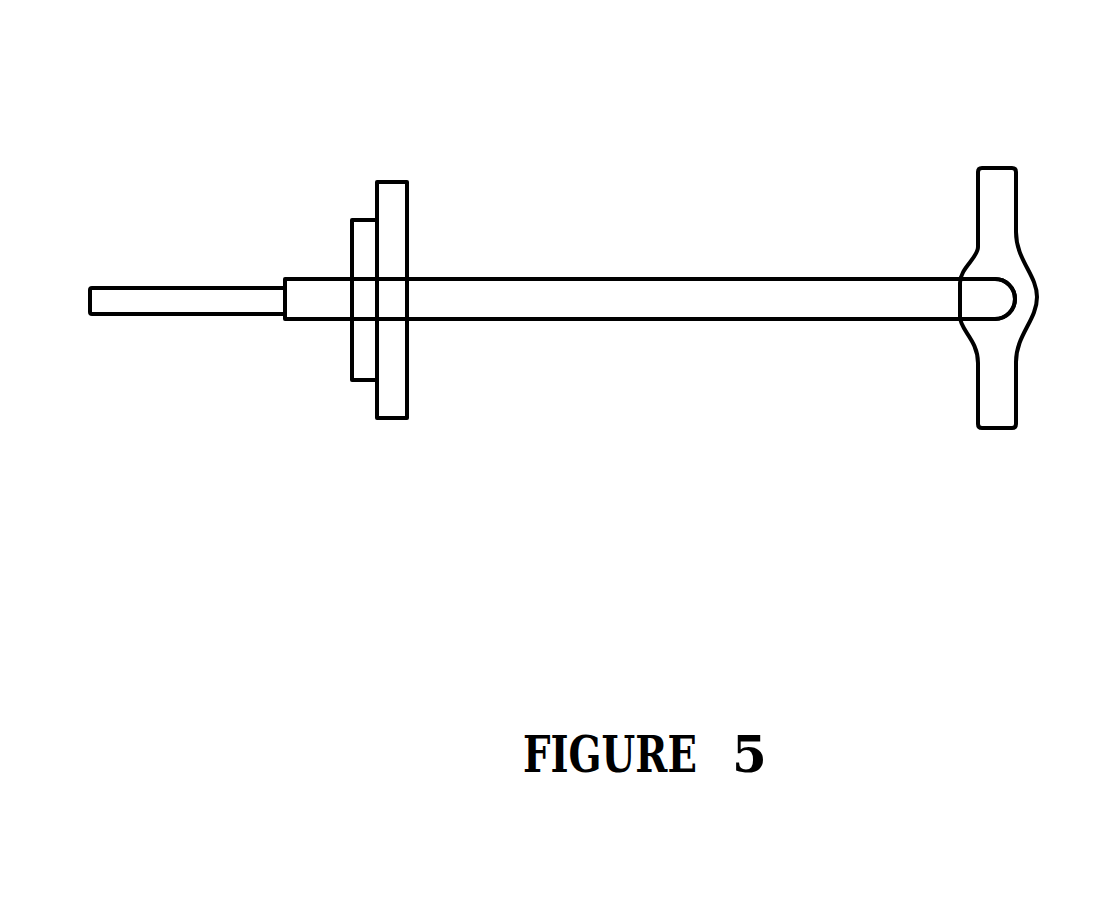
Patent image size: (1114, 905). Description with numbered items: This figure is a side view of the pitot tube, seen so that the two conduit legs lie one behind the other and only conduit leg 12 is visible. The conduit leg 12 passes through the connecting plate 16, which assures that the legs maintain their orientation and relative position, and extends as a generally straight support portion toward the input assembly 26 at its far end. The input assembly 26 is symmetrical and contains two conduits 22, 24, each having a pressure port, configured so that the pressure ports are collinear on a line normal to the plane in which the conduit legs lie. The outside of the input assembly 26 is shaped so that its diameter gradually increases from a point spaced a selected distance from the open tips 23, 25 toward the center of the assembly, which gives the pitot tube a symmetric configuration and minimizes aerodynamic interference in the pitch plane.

The conduit leg 12 is at (585, 320).
The connecting plate 16 is at (408, 222).
The conduit 22 is at (975, 192).
The open tip 23 is at (987, 167).
The conduit 24 is at (973, 403).
The open tip 25 is at (997, 432).
The input assembly 26 is at (958, 281).